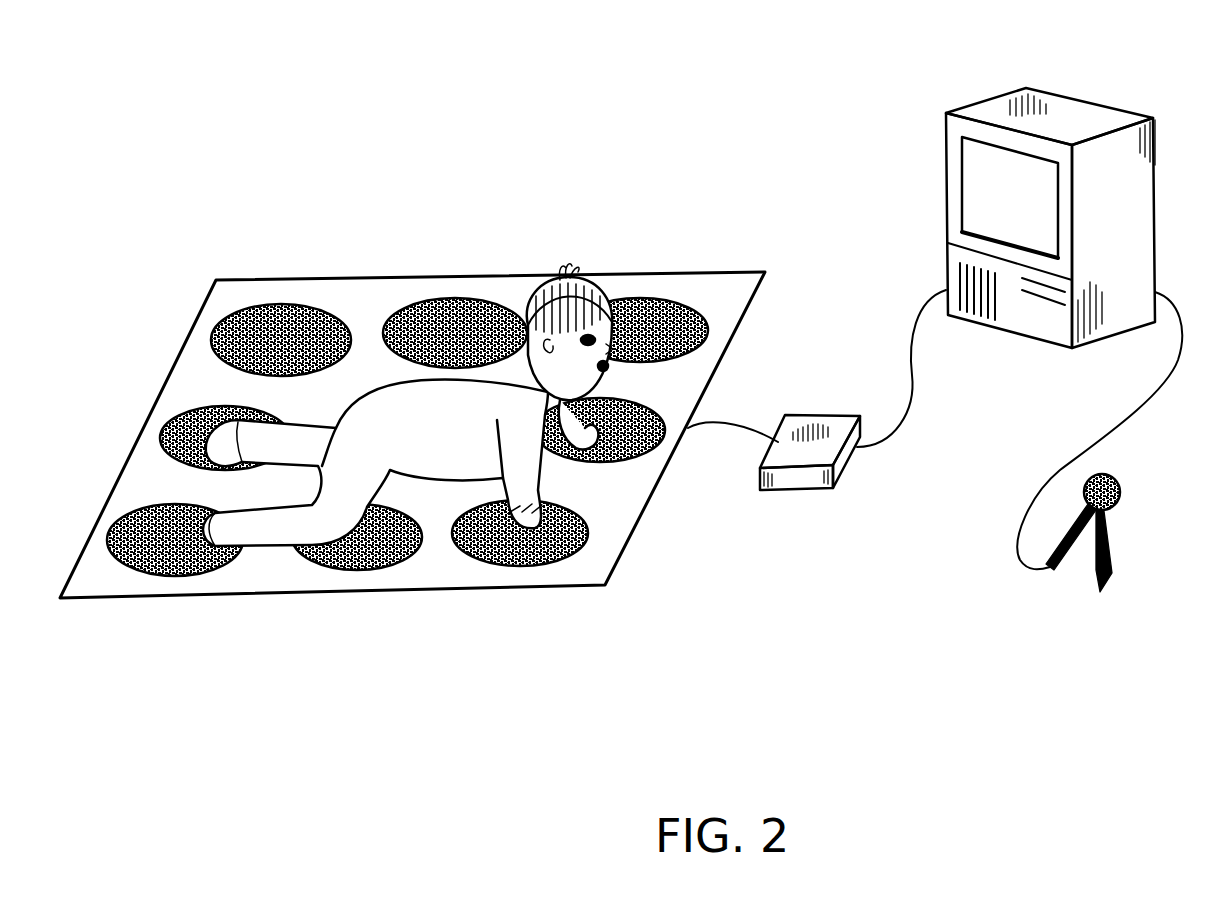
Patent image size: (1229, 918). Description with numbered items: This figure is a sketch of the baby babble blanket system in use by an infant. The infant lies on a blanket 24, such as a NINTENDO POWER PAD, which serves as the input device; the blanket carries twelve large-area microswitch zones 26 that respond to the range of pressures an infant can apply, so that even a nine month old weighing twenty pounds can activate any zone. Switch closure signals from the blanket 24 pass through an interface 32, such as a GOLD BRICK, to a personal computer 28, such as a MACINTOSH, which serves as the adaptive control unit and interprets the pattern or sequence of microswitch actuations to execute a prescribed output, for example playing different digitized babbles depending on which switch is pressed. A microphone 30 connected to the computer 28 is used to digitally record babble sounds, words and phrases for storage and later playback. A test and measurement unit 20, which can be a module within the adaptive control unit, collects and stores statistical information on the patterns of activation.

The test and measurement unit 20 is at (1012, 298).
The blanket 24 is at (200, 315).
The microswitch zones 26 is at (275, 313).
The personal computer 28 is at (958, 112).
The microphone 30 is at (1118, 506).
The interface 32 is at (818, 490).